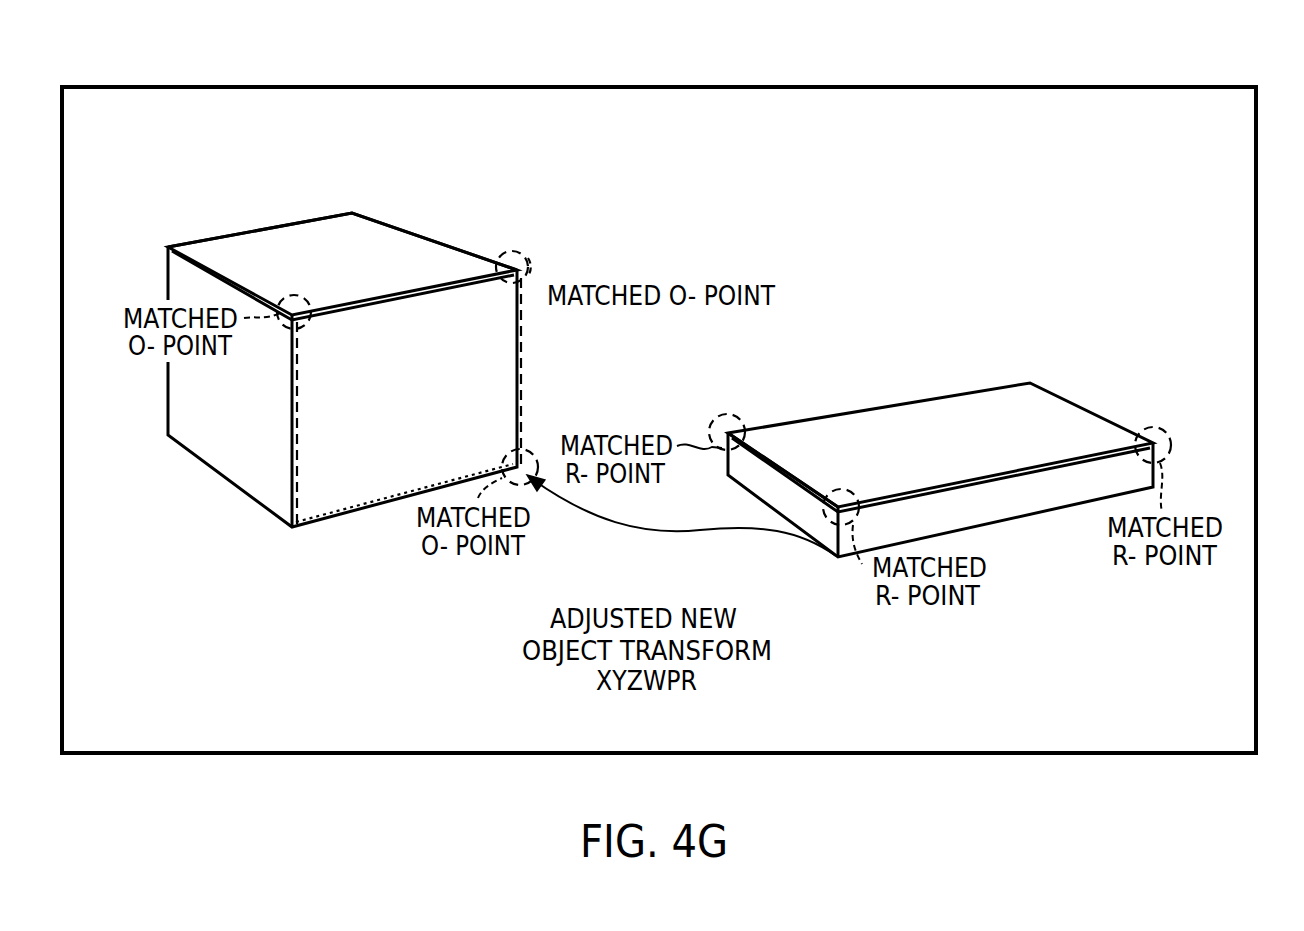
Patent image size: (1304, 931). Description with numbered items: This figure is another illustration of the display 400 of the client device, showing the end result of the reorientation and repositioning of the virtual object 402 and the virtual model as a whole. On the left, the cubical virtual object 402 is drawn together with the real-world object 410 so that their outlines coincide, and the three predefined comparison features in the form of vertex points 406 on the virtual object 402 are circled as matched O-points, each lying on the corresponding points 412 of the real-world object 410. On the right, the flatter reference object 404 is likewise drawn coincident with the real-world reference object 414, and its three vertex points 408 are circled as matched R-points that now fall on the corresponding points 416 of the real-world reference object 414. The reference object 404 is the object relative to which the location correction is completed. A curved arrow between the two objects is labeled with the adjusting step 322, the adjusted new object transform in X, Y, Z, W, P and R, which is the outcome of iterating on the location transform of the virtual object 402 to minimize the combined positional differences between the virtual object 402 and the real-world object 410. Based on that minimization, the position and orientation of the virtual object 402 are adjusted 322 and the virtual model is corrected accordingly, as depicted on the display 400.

The display 400 is at (1150, 72).
The virtual object 402 is at (236, 233).
The real-world object 410 is at (308, 221).
The vertex points 406 is at (503, 250).
The points 412 is at (533, 260).
The reference object 404 is at (949, 394).
The real-world reference object 414 is at (1041, 386).
The vertex points 408 is at (711, 418).
The points 416 is at (737, 412).
The adjusting step 322 is at (767, 550).